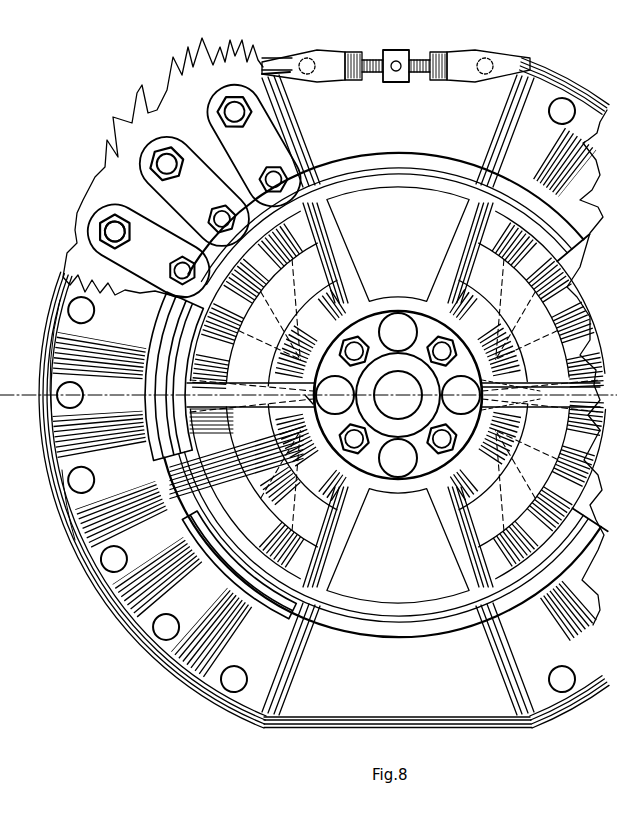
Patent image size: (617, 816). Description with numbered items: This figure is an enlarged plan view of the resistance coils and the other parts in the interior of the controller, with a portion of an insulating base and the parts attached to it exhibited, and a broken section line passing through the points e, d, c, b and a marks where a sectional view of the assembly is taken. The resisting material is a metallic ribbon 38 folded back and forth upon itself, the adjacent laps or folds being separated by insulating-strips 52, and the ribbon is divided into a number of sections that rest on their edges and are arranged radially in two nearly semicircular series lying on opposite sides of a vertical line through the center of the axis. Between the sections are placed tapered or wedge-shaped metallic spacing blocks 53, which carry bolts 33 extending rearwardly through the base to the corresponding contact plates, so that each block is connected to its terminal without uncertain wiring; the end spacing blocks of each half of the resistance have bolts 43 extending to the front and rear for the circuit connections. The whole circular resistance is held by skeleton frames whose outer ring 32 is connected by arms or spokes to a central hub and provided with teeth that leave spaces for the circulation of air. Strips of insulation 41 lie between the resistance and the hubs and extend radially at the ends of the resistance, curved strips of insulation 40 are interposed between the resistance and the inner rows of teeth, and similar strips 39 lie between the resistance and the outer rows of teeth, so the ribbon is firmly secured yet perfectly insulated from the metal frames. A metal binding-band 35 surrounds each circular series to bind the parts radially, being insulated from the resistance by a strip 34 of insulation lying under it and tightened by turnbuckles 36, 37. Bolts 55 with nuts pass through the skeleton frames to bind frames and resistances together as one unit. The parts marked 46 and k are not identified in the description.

The outer ring 32 is at (403, 634).
The bolt 33 is at (110, 233).
The strip of insulation 34 is at (283, 78).
The binding-band 35 is at (260, 65).
The turnbuckle 36 is at (427, 47).
The turnbuckle 37 is at (395, 57).
The metallic ribbon 38 is at (65, 435).
The strip of insulation 39 is at (197, 448).
The curved strip of insulation 40 is at (541, 399).
The strip of insulation 41 is at (358, 495).
The bolt 43 is at (565, 100).
The coil windings 46 is at (260, 417).
The insulating-strip 52 is at (50, 462).
The spacing block 53 is at (205, 568).
The bolt 55 is at (436, 445).
The section-line point a is at (63, 528).
The section-line point b is at (312, 411).
The section-line point c is at (322, 394).
The section-line point d is at (370, 368).
The section-line point e is at (147, 150).
The link k is at (150, 167).